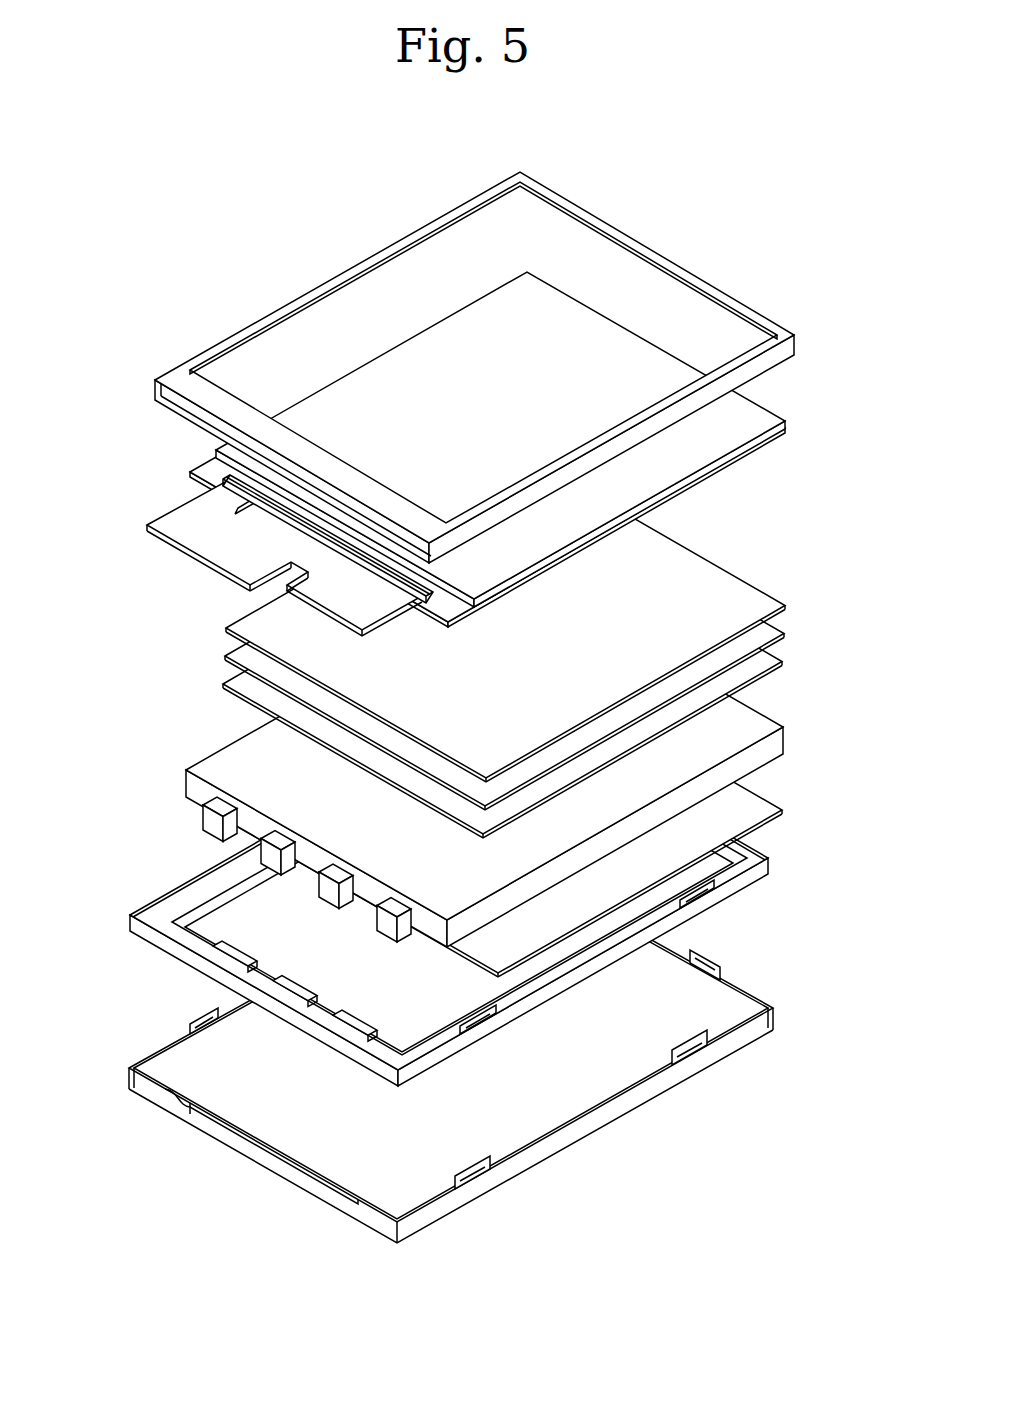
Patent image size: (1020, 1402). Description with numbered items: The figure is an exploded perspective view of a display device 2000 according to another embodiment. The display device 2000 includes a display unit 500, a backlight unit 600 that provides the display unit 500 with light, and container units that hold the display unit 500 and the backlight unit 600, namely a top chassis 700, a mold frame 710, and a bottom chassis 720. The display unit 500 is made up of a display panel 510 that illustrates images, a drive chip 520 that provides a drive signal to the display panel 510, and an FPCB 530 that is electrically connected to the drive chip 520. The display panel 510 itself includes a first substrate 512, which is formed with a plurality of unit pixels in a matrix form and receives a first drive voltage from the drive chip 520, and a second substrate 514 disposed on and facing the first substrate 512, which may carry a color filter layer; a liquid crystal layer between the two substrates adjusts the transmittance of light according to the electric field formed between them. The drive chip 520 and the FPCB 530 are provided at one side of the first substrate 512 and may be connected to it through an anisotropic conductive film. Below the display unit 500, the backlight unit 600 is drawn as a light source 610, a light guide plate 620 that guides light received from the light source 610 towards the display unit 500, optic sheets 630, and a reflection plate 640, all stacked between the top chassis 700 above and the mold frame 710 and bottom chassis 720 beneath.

The display device 2000 is at (367, 177).
The display unit 500 is at (409, 456).
The display panel 510 is at (435, 456).
The first substrate 512 is at (200, 478).
The second substrate 514 is at (225, 453).
The drive chip 520 is at (310, 517).
The FPCB 530 is at (215, 548).
The backlight unit 600 is at (508, 717).
The light source 610 is at (208, 820).
The light guide plate 620 is at (772, 745).
The optic sheets 630 is at (870, 823).
The reflection plate 640 is at (772, 806).
The top chassis 700 is at (625, 233).
The mold frame 710 is at (768, 862).
The bottom chassis 720 is at (762, 1020).